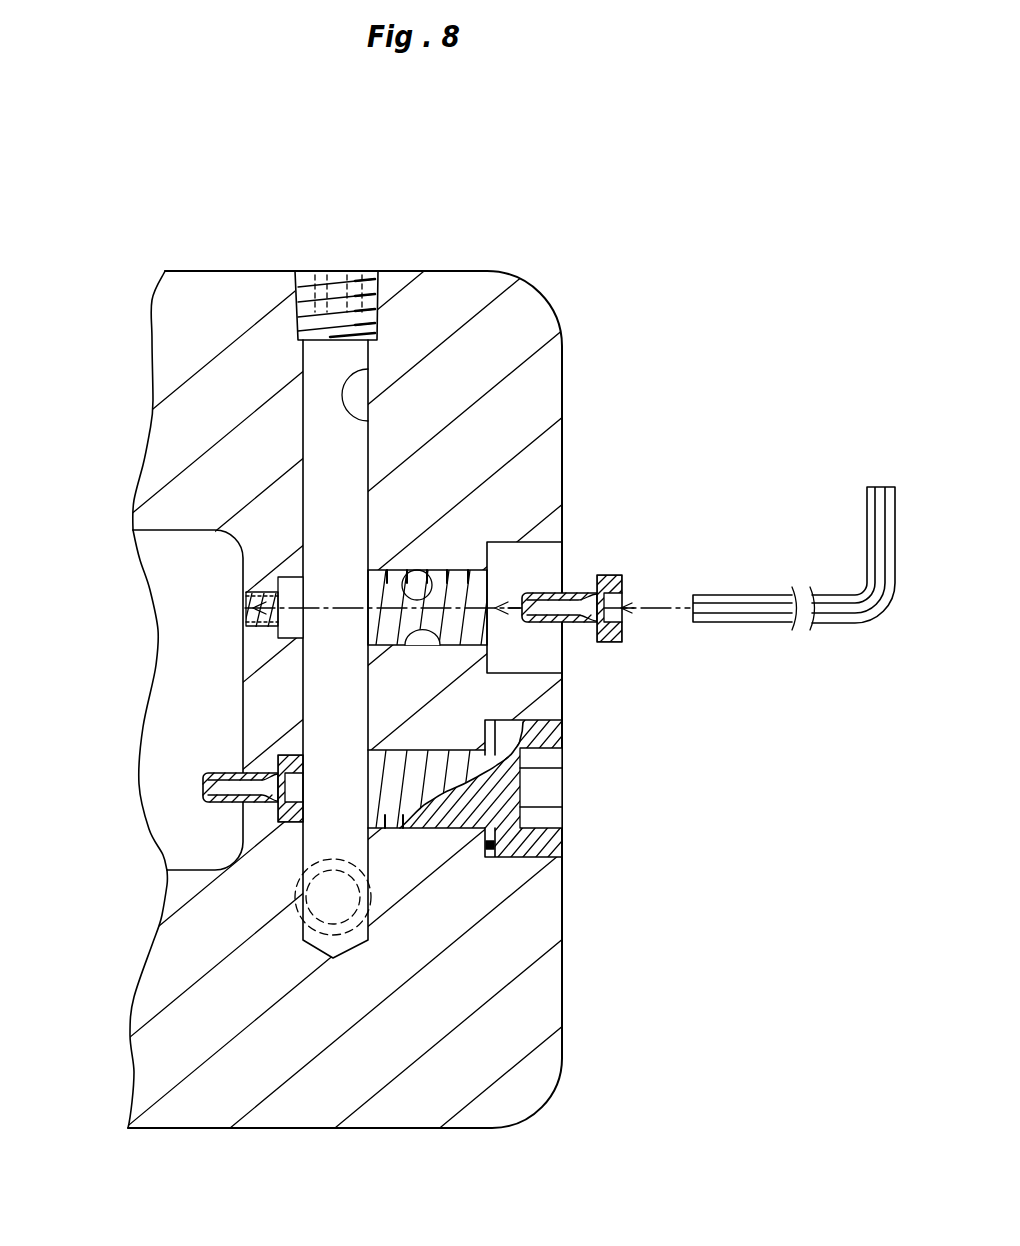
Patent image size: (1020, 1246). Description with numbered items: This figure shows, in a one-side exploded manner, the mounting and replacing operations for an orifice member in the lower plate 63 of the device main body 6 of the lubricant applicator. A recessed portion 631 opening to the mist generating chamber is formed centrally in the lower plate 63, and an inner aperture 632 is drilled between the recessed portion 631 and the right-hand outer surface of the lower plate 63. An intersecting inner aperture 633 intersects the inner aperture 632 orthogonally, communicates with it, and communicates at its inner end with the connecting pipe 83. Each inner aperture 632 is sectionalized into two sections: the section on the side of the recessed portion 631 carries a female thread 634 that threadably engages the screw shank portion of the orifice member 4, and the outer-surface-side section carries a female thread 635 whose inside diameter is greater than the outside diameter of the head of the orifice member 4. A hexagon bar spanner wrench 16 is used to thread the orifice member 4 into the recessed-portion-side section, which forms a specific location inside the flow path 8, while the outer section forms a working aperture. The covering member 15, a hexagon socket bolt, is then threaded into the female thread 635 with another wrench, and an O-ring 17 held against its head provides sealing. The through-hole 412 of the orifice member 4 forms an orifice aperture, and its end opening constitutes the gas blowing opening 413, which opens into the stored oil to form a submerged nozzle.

The device main body 6 is at (228, 271).
The lower plate 63 is at (350, 642).
The recessed portion 631 is at (168, 847).
The inner aperture 632 is at (440, 645).
The intersecting inner aperture 633 is at (364, 422).
The female thread 634 is at (246, 615).
The female thread 635 is at (437, 570).
The flow path 8 is at (317, 716).
The connecting pipe 83 is at (352, 942).
The orifice member 4 is at (607, 575).
The through-hole 412 is at (205, 773).
The gas blowing opening 413 is at (205, 790).
The covering member 15 is at (565, 840).
The hexagon bar spanner wrench 16 is at (760, 624).
The O-ring 17 is at (480, 845).